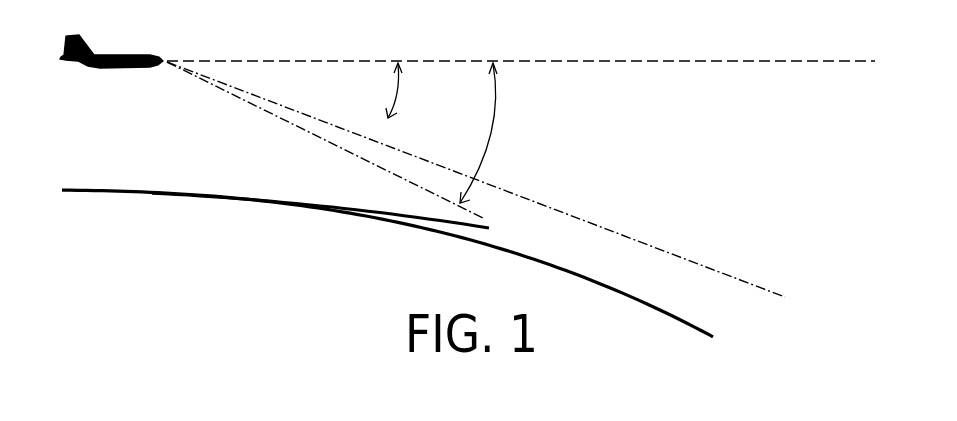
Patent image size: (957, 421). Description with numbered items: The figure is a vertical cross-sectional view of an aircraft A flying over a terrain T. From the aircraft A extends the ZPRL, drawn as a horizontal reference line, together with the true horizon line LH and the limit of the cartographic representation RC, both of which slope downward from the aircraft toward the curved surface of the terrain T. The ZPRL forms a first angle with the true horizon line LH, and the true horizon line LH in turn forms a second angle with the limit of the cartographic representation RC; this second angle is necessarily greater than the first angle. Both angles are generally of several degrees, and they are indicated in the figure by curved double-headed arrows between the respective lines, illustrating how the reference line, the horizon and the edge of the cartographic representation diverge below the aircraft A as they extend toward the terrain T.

The aircraft A is at (127, 69).
The element ZPRL is at (720, 63).
The true horizon line LH is at (588, 222).
The limit of the cartographic representation RC is at (271, 116).
The terrain T is at (105, 193).